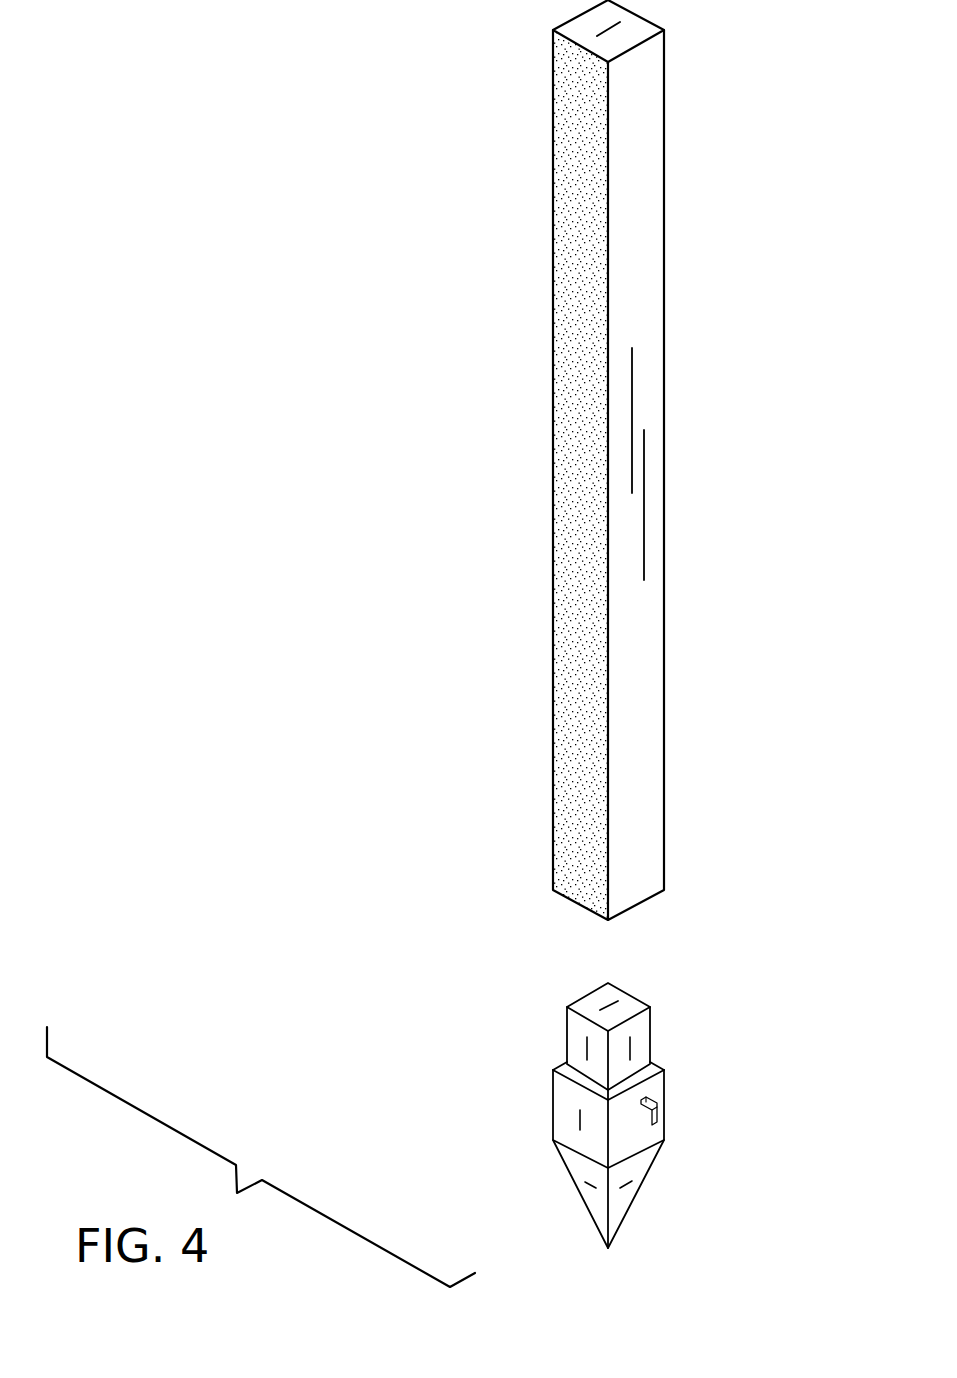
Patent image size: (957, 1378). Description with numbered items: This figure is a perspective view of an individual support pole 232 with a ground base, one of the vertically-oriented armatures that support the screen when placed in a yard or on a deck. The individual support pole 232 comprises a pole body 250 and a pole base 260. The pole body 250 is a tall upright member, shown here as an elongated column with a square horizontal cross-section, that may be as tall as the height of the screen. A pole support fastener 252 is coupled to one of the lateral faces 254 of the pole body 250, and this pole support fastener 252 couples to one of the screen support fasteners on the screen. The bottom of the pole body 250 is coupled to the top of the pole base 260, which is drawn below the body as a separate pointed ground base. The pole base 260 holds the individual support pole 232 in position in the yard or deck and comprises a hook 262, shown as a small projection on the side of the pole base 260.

The individual support pole 232 is at (412, 1222).
The pole body 250 is at (640, 300).
The pole support fastener 252 is at (570, 662).
The lateral face 254 is at (580, 183).
The pole base 260 is at (782, 1250).
The hook 262 is at (657, 1115).